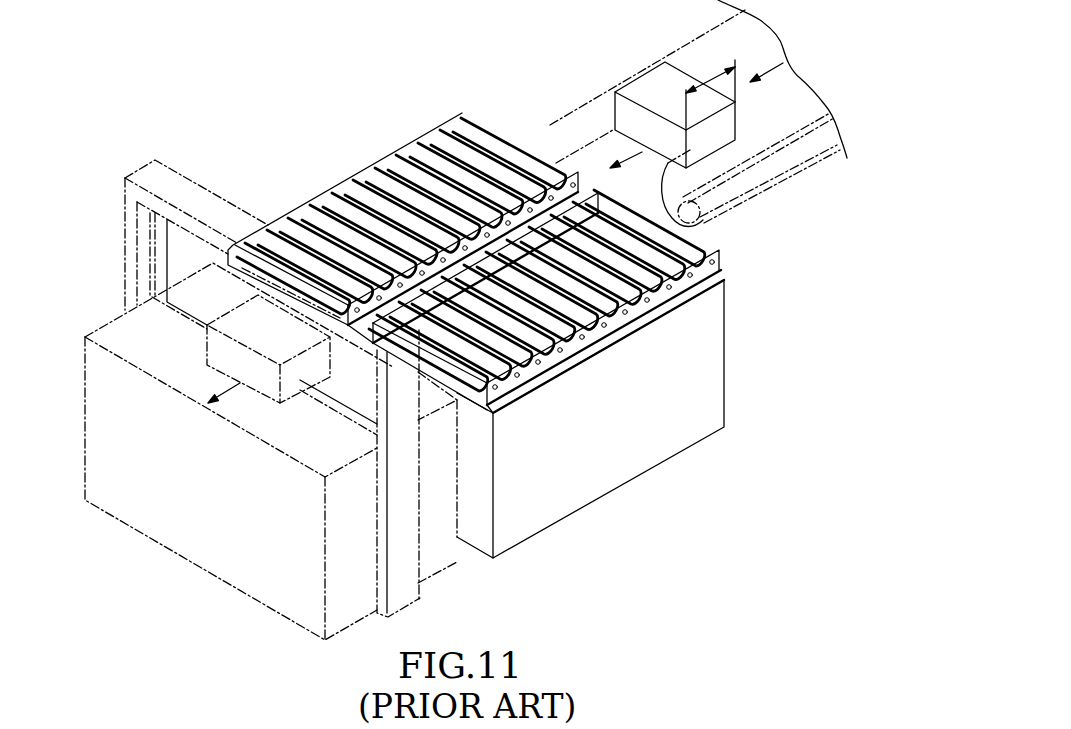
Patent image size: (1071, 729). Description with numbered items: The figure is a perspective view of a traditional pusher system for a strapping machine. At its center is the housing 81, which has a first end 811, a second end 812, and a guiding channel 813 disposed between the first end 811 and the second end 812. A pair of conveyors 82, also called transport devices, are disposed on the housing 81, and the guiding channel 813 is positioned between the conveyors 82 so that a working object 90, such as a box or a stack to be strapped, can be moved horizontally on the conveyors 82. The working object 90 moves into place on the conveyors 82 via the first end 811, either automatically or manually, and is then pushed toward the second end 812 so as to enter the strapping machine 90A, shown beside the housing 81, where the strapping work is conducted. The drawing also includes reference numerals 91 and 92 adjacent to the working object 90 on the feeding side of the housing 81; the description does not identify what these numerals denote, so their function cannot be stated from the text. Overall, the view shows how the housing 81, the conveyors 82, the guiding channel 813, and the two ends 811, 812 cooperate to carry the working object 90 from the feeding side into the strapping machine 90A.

The housing 81 is at (514, 328).
The first end 811 is at (724, 355).
The second end 812 is at (482, 522).
The guiding channel 813 is at (545, 192).
The pair of conveyors 82 is at (466, 316).
The working object 90 is at (643, 85).
The strapping machine 90A is at (173, 542).
The belt conveyor 91 is at (703, 200).
The conveyor belt 92 is at (740, 132).